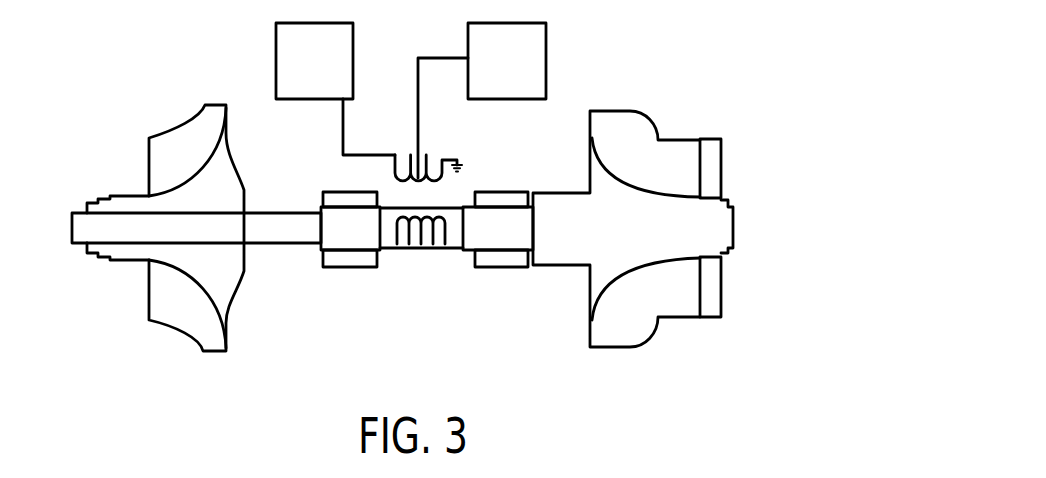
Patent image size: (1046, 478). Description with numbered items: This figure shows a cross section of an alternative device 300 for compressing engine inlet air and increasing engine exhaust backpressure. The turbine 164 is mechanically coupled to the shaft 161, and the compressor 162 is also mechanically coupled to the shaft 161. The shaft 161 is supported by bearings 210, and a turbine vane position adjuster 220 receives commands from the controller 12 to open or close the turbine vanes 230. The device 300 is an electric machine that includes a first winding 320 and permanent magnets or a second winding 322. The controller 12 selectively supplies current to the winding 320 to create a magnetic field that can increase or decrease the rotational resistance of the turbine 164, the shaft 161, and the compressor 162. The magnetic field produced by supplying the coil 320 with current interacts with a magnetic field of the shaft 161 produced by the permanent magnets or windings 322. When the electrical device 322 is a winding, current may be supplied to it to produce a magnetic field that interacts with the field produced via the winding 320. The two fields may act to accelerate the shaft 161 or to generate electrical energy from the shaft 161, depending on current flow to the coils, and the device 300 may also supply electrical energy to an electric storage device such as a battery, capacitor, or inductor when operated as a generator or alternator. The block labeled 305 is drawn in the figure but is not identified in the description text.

The device 300 is at (688, 62).
The controller 305 is at (335, 74).
The controller 12 is at (520, 74).
The shaft 161 is at (260, 245).
The compressor 162 is at (213, 352).
The turbine 164 is at (608, 348).
The bearings 210 is at (342, 191).
The turbine vane position adjuster 220 is at (711, 318).
The turbine vanes 230 is at (675, 169).
The first winding 320 is at (413, 181).
The permanent magnets or second winding 322 is at (445, 244).